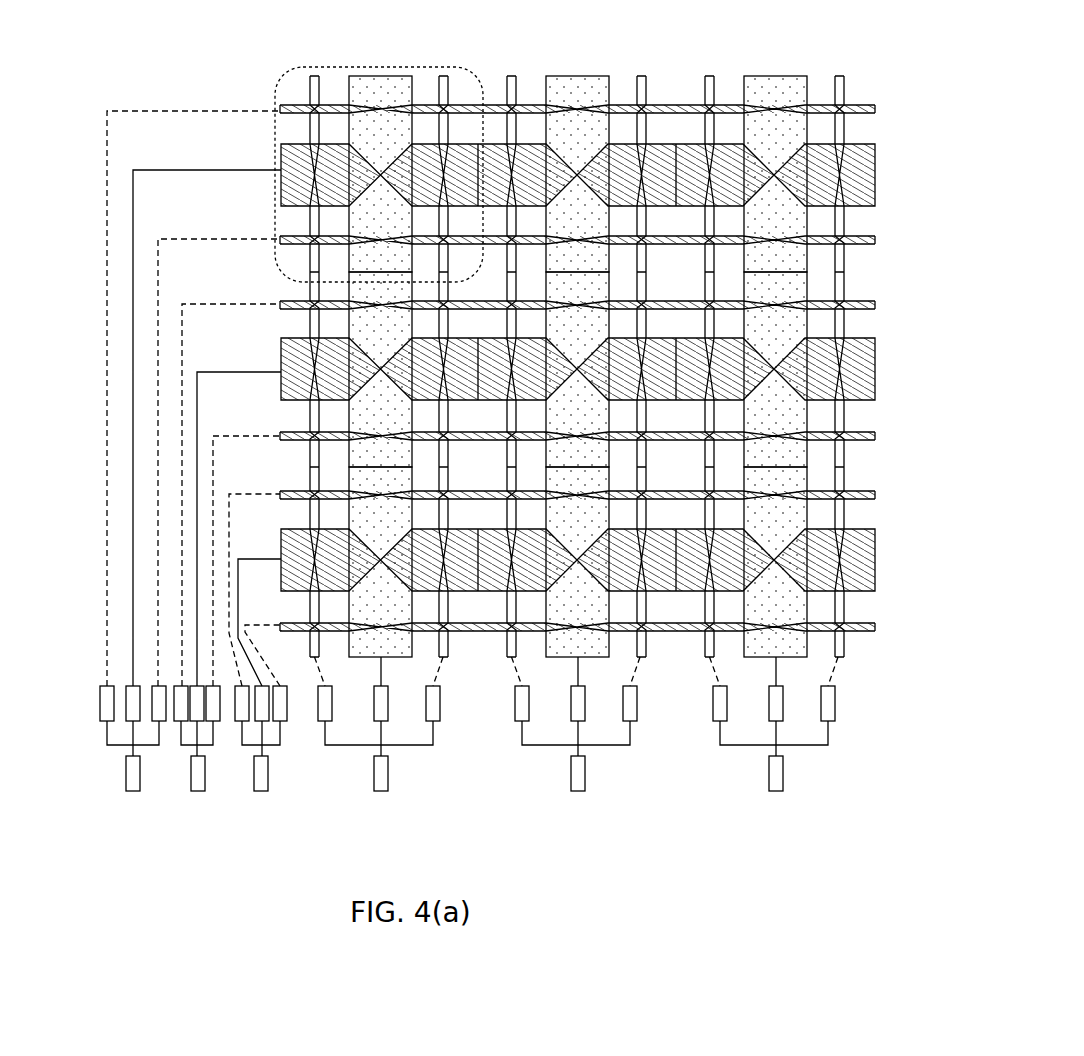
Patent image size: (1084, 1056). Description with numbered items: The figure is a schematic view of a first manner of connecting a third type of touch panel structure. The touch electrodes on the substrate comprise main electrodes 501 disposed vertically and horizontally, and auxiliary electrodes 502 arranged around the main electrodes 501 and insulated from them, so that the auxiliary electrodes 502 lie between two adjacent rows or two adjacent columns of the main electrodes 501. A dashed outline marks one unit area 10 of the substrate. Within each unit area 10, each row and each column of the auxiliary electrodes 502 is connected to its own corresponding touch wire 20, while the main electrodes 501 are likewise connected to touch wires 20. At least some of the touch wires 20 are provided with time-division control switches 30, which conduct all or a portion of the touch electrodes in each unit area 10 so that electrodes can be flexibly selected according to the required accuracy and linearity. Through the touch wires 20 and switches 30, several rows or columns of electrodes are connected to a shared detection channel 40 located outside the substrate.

The unit area 10 is at (372, 68).
The touch wire 20 is at (107, 257).
The time-division control switch 30 is at (100, 708).
The detection channel 40 is at (128, 780).
The main electrode 501 is at (573, 77).
The auxiliary electrode 502 is at (643, 77).